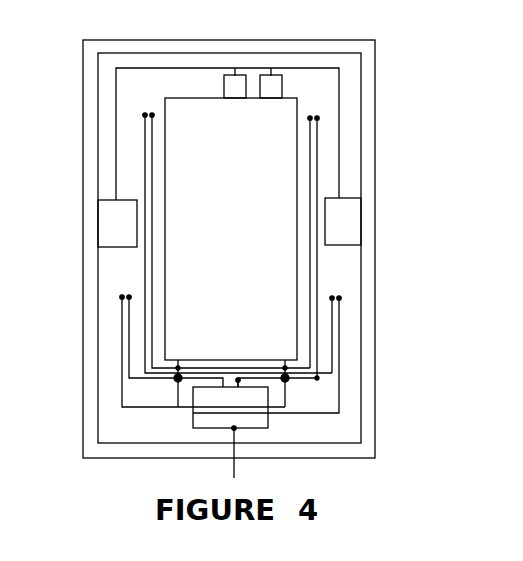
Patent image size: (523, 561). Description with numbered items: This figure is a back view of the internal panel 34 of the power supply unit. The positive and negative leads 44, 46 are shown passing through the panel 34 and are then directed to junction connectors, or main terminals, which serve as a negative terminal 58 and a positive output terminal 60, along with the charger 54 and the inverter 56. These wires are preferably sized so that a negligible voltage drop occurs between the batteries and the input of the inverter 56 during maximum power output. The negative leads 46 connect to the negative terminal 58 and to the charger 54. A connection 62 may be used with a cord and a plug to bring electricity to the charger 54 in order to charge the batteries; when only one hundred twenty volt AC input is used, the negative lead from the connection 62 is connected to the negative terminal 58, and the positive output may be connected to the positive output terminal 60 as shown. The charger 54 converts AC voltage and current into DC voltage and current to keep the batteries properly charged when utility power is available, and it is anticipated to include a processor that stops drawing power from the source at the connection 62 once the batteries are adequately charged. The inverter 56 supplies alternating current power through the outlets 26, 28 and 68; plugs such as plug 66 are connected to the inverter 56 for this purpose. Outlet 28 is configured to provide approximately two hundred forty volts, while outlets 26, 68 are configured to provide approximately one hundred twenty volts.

The outlet 26 is at (111, 218).
The outlet 28 is at (111, 272).
The internal panel 34 is at (373, 78).
The positive lead 44 is at (152, 115).
The negative lead 46 is at (145, 116).
The charger 54 is at (257, 422).
The inverter 56 is at (231, 229).
The negative terminal 58 is at (178, 378).
The positive output terminal 60 is at (285, 378).
The connection 62 is at (238, 381).
The plug 66 is at (271, 80).
The outlet 68 is at (350, 216).